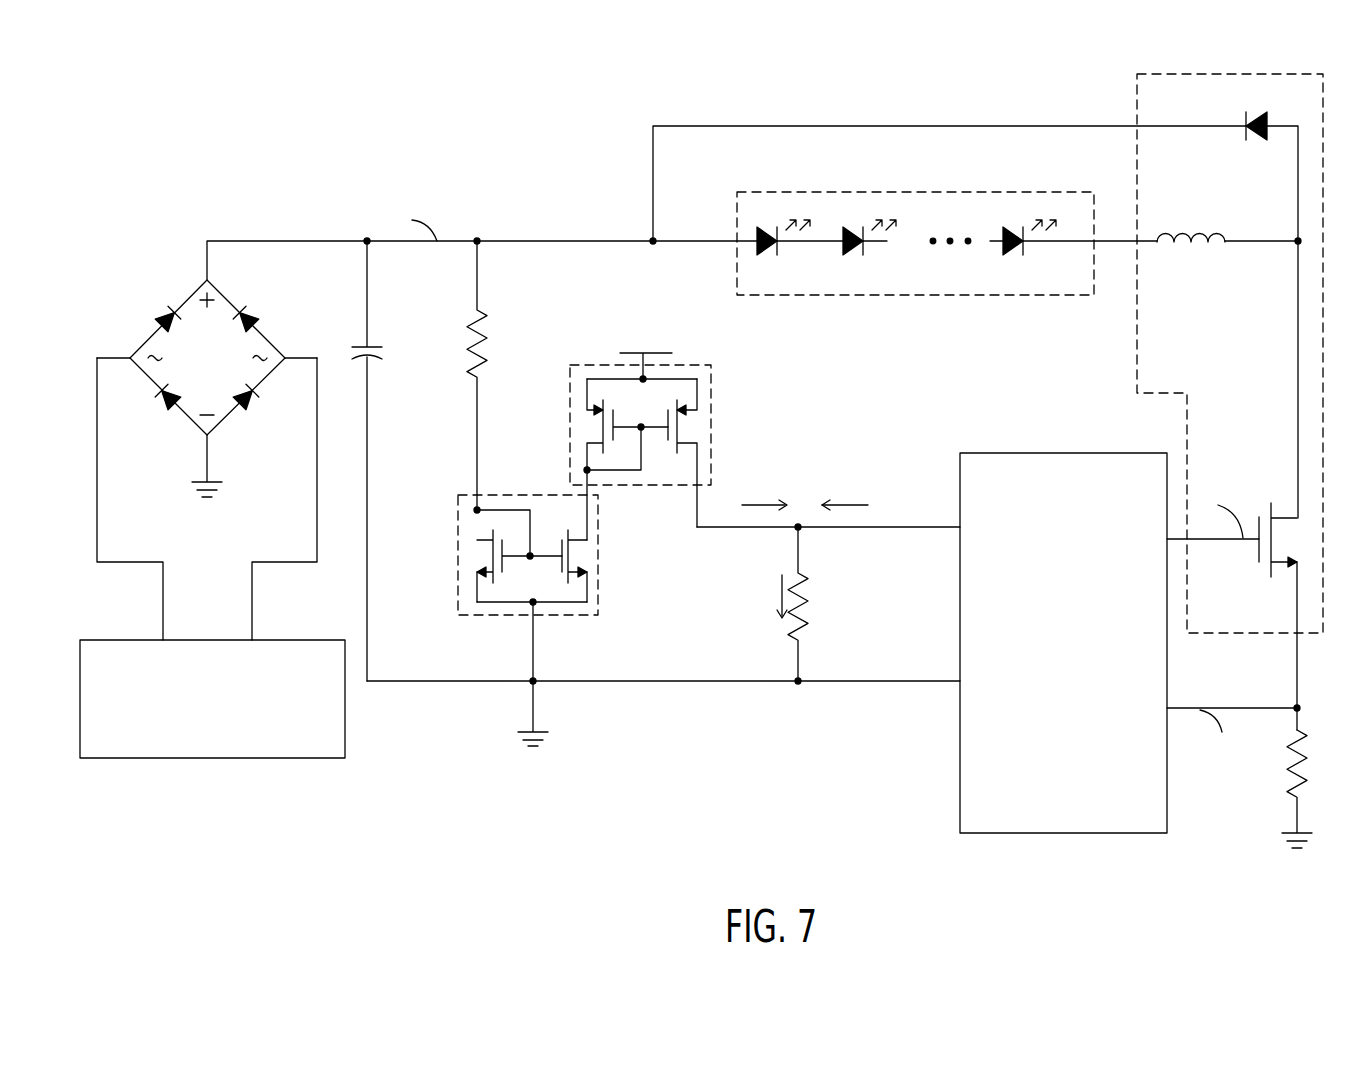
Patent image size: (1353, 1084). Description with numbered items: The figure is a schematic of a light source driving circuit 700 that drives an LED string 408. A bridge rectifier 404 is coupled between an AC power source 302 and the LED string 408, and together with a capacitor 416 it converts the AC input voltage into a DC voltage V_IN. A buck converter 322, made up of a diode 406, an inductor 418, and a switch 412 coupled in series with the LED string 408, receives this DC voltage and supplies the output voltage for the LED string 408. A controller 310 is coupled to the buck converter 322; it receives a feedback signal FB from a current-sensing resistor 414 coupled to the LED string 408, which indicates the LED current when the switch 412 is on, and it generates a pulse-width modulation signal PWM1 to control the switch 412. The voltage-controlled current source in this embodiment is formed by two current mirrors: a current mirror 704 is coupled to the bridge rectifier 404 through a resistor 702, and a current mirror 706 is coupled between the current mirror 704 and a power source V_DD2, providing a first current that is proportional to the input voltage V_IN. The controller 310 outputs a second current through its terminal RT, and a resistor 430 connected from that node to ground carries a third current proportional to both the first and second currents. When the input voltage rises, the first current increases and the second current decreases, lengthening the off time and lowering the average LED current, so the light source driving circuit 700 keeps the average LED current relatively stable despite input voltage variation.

The light source driving circuit 700 is at (252, 180).
The AC power source 302 is at (290, 640).
The bridge rectifier 404 is at (262, 330).
The capacitor 416 is at (372, 347).
The resistor 702 is at (480, 362).
The current mirror 704 is at (597, 577).
The current mirror 706 is at (712, 423).
The resistor 430 is at (805, 598).
The controller 310 is at (1013, 453).
The LED string 408 is at (952, 192).
The buck converter 322 is at (1137, 110).
The diode 406 is at (1247, 120).
The inductor 418 is at (1218, 232).
The switch 412 is at (1255, 560).
The resistor 414 is at (1290, 783).